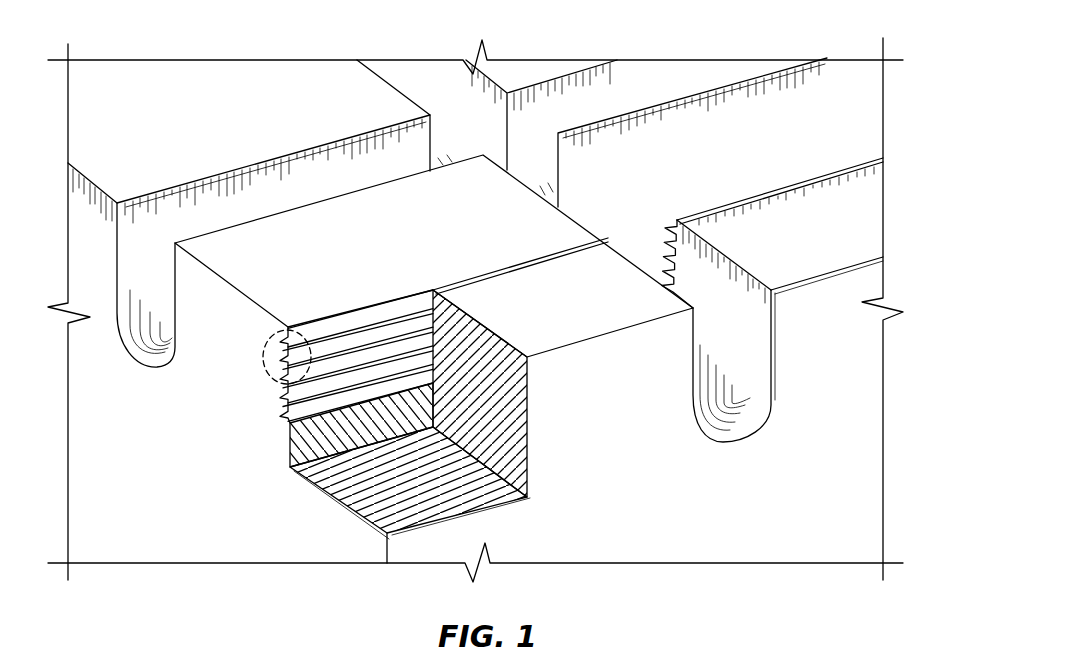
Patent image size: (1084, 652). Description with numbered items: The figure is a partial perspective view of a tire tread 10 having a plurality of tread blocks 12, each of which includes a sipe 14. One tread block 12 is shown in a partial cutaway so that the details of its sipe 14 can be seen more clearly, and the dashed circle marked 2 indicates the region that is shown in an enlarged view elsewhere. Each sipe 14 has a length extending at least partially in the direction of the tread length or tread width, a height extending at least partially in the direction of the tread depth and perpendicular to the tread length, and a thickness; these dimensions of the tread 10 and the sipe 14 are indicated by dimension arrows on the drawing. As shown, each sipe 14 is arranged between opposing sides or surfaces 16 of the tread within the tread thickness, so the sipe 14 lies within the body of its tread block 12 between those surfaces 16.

The tire tread 10 is at (850, 2).
The tread block 12 is at (307, 200).
The sipe 14 is at (462, 280).
The opposing sides or surfaces of the tread 16 is at (384, 306).
The detail callout (FIG. 2) 2 is at (264, 366).